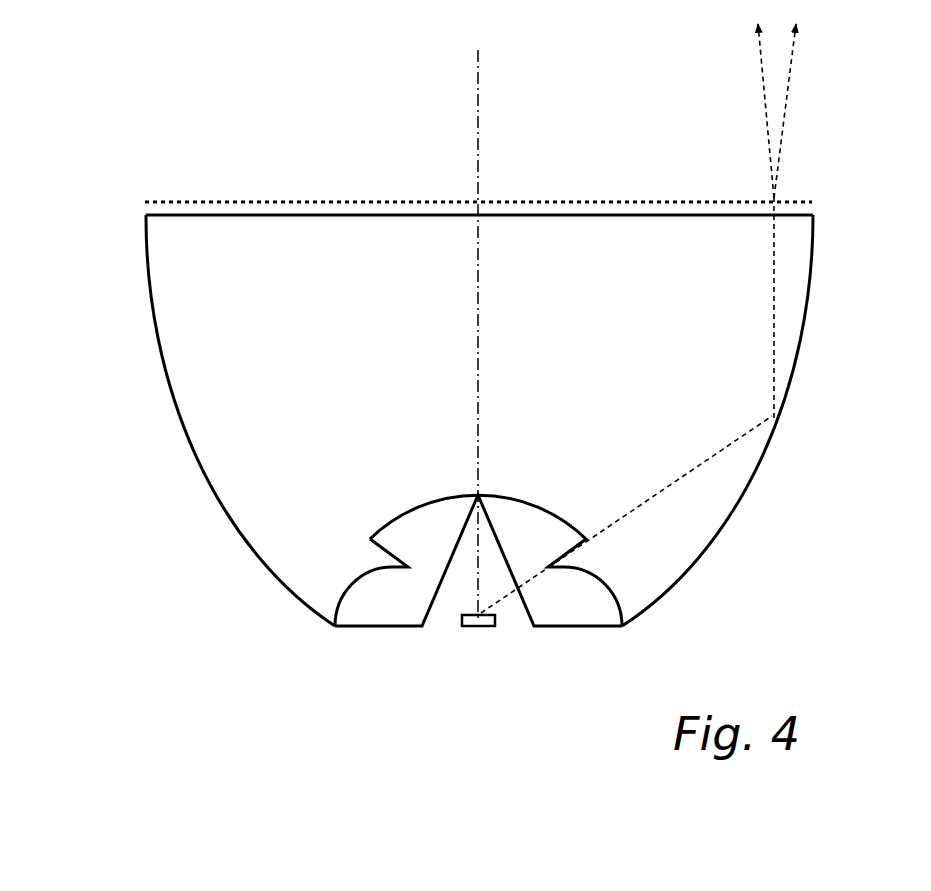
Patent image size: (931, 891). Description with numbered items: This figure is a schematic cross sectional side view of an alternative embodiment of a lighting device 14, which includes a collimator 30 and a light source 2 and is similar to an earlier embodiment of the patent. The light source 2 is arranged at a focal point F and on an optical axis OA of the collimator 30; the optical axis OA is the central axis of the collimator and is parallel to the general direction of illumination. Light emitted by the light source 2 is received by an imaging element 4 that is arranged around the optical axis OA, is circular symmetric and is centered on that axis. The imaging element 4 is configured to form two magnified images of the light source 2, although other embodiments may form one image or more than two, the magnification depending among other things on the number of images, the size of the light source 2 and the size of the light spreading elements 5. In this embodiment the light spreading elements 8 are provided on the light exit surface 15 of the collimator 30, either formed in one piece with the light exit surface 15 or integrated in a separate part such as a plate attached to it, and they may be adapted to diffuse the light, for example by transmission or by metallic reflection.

The lighting device 14 is at (432, 376).
The light spreading elements 5 is at (288, 190).
The light exit surface 15 is at (283, 216).
The optical axis OA is at (478, 100).
The light spreading elements 8 is at (188, 440).
The imaging element 4 is at (442, 499).
The light source 2 is at (482, 628).
The focal point F is at (468, 639).
The collimator 30 is at (724, 580).